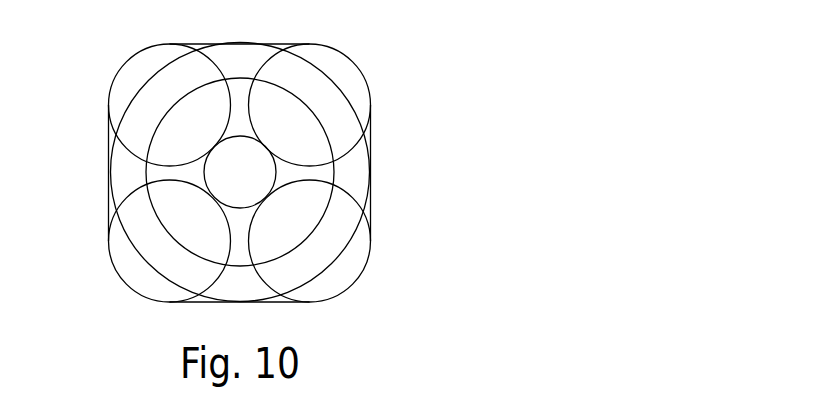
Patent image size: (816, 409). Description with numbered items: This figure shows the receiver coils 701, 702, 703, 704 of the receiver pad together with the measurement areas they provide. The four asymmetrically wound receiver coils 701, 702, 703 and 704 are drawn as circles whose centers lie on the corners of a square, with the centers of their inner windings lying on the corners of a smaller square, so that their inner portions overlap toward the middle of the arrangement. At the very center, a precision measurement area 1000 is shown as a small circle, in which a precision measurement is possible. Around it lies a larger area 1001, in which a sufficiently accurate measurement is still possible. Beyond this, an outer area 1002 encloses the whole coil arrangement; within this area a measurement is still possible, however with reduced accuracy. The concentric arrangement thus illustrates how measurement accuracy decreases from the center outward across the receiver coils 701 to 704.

The receiver coil 701 is at (130, 71).
The receiver coil 702 is at (130, 272).
The receiver coil 703 is at (337, 277).
The receiver coil 704 is at (342, 70).
The precision measurement area 1000 is at (252, 172).
The area in which a sufficiently accurate measurement is possible 1001 is at (303, 174).
The area allowing measurement with reduced accuracy 1002 is at (303, 173).